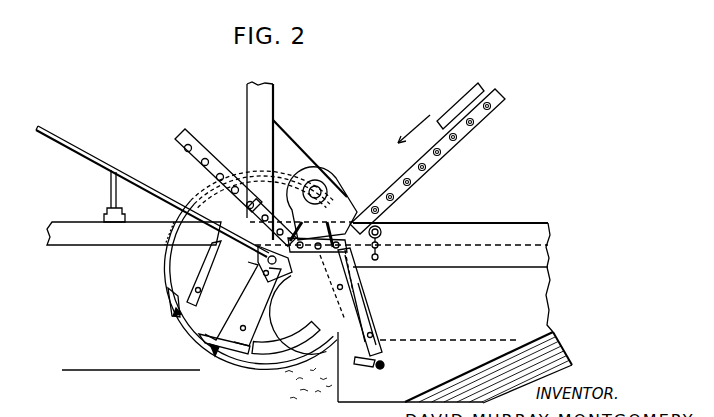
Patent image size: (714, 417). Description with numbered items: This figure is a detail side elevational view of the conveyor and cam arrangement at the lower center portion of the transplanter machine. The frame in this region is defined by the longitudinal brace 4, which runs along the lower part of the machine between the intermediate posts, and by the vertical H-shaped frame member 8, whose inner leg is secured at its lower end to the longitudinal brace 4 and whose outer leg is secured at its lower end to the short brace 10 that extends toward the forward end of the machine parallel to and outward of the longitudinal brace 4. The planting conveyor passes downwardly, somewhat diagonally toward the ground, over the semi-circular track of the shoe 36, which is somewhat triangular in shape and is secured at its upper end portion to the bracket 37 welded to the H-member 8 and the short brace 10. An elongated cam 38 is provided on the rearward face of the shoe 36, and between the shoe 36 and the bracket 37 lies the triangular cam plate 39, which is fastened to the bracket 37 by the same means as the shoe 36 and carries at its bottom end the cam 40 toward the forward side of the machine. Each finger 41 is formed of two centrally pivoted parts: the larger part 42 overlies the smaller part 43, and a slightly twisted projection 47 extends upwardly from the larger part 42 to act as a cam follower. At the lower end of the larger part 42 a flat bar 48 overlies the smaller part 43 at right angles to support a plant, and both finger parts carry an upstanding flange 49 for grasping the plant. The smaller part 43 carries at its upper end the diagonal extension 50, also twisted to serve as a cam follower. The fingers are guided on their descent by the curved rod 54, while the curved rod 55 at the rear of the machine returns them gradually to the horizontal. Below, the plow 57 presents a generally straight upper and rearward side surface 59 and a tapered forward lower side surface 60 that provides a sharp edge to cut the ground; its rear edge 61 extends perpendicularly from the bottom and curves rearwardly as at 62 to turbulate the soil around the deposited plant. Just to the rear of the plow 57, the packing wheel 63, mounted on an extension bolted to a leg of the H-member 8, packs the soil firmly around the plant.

The longitudinal brace 4 is at (128, 240).
The vertical H-shaped frame member 8 is at (267, 101).
The short brace 10 is at (428, 223).
The shoe 36 is at (358, 199).
The bracket 37 is at (307, 156).
The elongated cam 38 is at (340, 193).
The cam plate 39 is at (297, 225).
The cam 40 is at (297, 259).
The finger 41 is at (247, 286).
The larger finger part 42 is at (249, 373).
The smaller finger part 43 is at (203, 270).
The projection 47 is at (285, 188).
The flat bar 48 is at (200, 336).
The upstanding flange 49 is at (210, 352).
The diagonal extension 50 is at (347, 252).
The curved rod 54 is at (470, 97).
The curved rod 55 is at (102, 160).
The plow 57 is at (512, 233).
The upper and rearward side surface 59 is at (445, 334).
The forward lower side surface 60 is at (542, 368).
The rear edge 61 is at (337, 402).
The rearward curve 62 is at (303, 301).
The packing wheel 63 is at (163, 288).